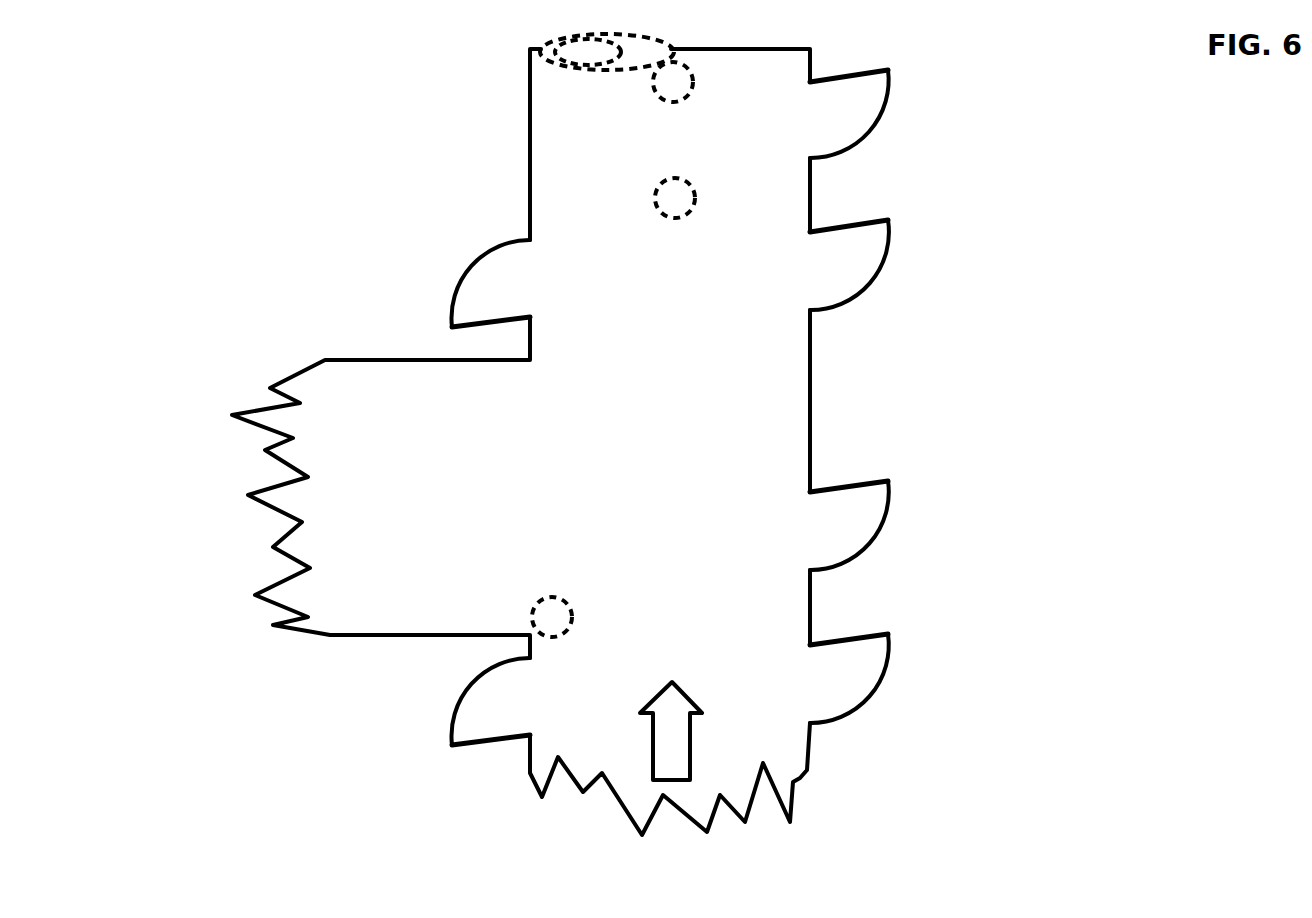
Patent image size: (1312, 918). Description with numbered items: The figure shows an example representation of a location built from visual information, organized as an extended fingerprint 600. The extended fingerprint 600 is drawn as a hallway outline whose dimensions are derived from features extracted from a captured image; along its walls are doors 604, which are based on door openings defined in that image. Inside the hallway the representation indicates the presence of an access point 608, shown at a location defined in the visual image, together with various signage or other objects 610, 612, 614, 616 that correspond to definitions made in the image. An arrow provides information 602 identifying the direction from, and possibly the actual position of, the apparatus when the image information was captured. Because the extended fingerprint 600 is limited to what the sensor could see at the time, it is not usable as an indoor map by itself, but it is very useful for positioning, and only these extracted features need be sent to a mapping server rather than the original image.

The extended fingerprint 600 is at (521, 442).
The information identifying direction 602 is at (656, 731).
The doors 604 is at (666, 411).
The access point 608 is at (693, 222).
The object 610 is at (578, 82).
The object 612 is at (692, 108).
The object 614 is at (607, 89).
The object 616 is at (533, 591).